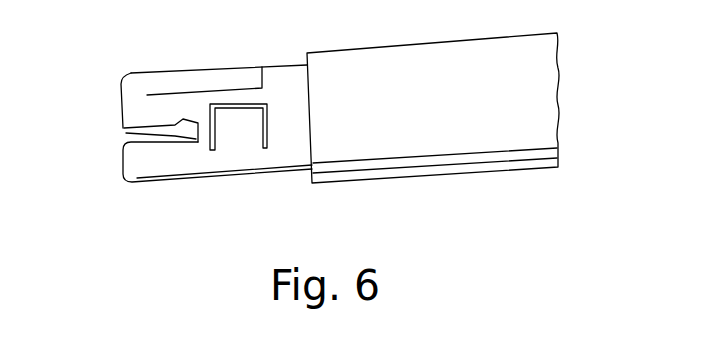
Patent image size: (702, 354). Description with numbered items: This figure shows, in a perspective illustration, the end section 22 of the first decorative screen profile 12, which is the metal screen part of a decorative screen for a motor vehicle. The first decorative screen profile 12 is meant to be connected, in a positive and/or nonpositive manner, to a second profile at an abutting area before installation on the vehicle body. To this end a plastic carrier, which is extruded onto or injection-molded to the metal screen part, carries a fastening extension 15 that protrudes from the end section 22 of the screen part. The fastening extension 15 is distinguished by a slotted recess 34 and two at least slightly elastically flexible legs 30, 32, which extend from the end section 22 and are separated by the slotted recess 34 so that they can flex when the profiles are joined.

The first decorative screen profile 12 is at (523, 143).
The fastening extension 15 is at (235, 158).
The end section 22 is at (345, 145).
The elastically flexible leg 30 is at (142, 168).
The elastically flexible leg 32 is at (136, 100).
The slotted recess 34 is at (127, 140).